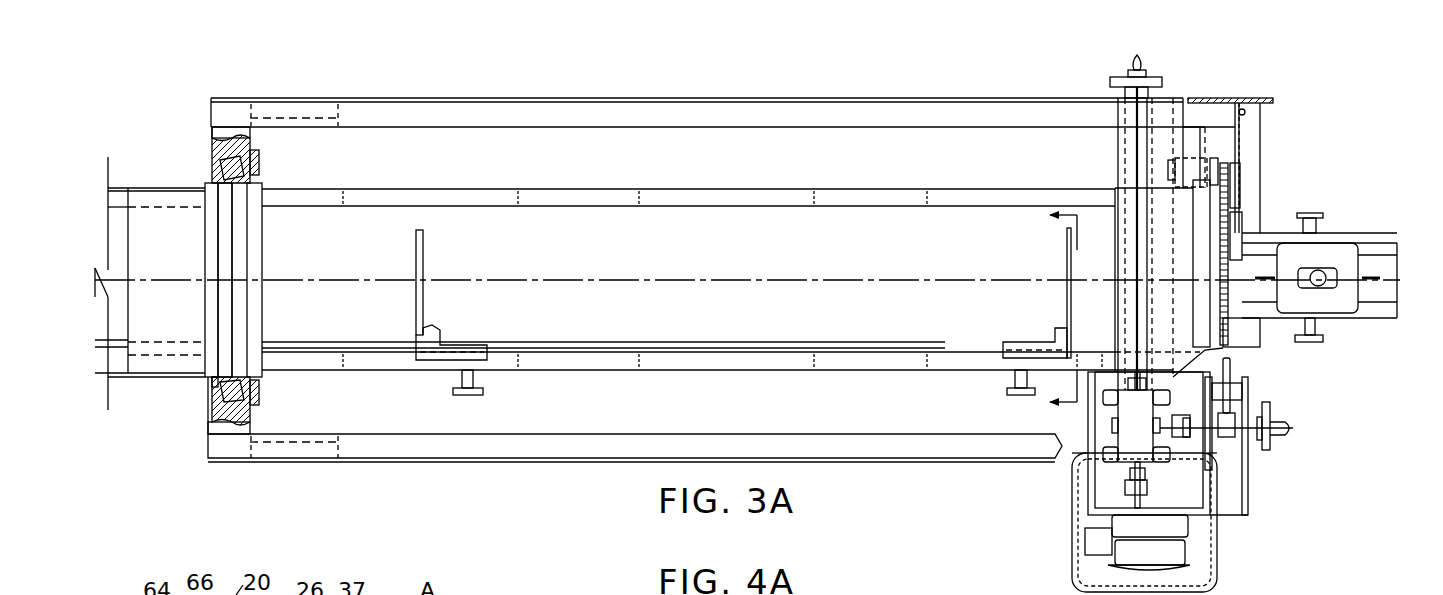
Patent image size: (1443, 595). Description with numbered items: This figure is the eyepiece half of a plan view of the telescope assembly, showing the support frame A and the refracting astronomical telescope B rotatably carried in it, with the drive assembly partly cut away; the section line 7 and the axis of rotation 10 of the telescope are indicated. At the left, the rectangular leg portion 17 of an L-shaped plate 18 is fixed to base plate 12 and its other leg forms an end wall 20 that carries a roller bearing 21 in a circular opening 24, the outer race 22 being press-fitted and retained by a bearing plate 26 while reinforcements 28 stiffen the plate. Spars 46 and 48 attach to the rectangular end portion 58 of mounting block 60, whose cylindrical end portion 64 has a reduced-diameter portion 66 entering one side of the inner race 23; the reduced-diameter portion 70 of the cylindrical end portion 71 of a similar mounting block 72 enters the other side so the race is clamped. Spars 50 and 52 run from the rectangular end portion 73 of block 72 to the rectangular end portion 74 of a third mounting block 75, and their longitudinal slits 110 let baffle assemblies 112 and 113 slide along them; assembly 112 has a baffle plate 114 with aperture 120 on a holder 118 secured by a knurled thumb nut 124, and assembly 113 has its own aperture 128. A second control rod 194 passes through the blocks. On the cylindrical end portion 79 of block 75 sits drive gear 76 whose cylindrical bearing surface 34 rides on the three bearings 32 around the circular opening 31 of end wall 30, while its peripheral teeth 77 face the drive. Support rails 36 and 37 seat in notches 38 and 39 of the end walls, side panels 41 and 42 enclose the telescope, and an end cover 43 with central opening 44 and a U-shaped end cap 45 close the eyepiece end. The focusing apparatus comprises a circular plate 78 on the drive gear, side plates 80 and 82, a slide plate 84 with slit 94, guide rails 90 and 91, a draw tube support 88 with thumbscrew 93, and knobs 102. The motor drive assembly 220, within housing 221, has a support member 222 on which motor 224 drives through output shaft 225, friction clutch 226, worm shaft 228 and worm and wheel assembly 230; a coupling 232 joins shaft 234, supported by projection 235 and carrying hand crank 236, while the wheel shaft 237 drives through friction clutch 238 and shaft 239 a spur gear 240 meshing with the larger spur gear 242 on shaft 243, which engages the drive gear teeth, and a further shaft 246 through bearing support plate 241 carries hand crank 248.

The center axis of apparatus 10 is at (786, 278).
The base plate 12 is at (606, 262).
The rectangular leg portion 17 is at (326, 424).
The L-shaped plate 18 is at (210, 428).
The end wall 20 is at (220, 410).
The roller bearing 21 is at (213, 385).
The outer race 22 is at (238, 402).
The inner race 23 is at (228, 384).
The circular opening 24 is at (252, 396).
The bearing plate 26 is at (256, 150).
The reinforcements 28 is at (300, 106).
The end wall 30 is at (1198, 128).
The circular opening 31 is at (1195, 152).
The bearings 32 is at (1230, 170).
The cylindrical bearing surface 34 is at (1215, 278).
The support rail 36 is at (552, 442).
The support rail 37 is at (928, 116).
The notches 38 is at (224, 130).
The notches 39 is at (1190, 128).
The side panel 41 is at (890, 460).
The side panel 42 is at (838, 97).
The end cover 43 is at (1248, 126).
The central opening 44 is at (1239, 192).
The U-shaped end cap 45 is at (1253, 98).
The spar 46 is at (118, 190).
The spar 48 is at (118, 366).
The spar 50 is at (680, 204).
The spar 52 is at (722, 366).
The rectangular end portion 58 is at (177, 329).
The mounting block 60 is at (159, 187).
The cylindrical end portion 64 is at (207, 182).
The reduced-diameter portion 66 is at (226, 243).
The reduced-diameter portion 70 is at (258, 251).
The cylindrical end portion 71 is at (252, 302).
The mounting block 72 is at (288, 185).
The rectangular end portion 73 is at (328, 307).
The rectangular end portion 74 is at (1113, 306).
The mounting block 75 is at (1114, 186).
The drive gear 76 is at (1236, 206).
The peripheral teeth 77 is at (1235, 332).
The circular plate 78 is at (1241, 225).
The cylindrical end portion 79 is at (1200, 230).
The side plate 80 is at (1320, 325).
The side plate 82 is at (1318, 240).
The slide plate 84 is at (1392, 273).
The draw tube support 88 is at (1343, 266).
The guide rail 90 is at (1378, 312).
The guide rail 91 is at (1395, 250).
The thumbscrew 93 is at (1318, 285).
The slit 94 is at (1366, 284).
The knobs 102 is at (1324, 217).
The longitudinal slits 110 is at (517, 197).
The baffle assembly 112 is at (1064, 286).
The baffle assembly 113 is at (438, 318).
The baffle plate 114 is at (1064, 242).
The baffle plate holder 118 is at (1043, 345).
The aperture 120 is at (1066, 276).
The knurled thumb nut 124 is at (1008, 392).
The aperture 128 is at (426, 258).
The second control rod 194 is at (676, 339).
The motor drive assembly 220 is at (1265, 504).
The housing 221 is at (1072, 570).
The support member 222 is at (1125, 159).
The motor 224 is at (1165, 561).
The output shaft 225 is at (1104, 520).
The friction clutch 226 is at (1148, 490).
The worm shaft 228 is at (1142, 470).
The worm and wheel assembly 230 is at (1150, 411).
The coupling 232 is at (1118, 374).
The shaft 234 is at (1135, 140).
The projection 235 is at (1118, 103).
The precision hand crank 236 is at (1153, 82).
The wheel shaft 237 is at (1155, 430).
The friction clutch 238 is at (1221, 514).
The shaft 239 is at (1268, 448).
The spur gear 240 is at (1240, 455).
The bearing support plate 241 is at (1247, 516).
The spur gear 242 is at (1235, 382).
The rotatable shaft 243 is at (1222, 392).
The rotatable shaft 246 is at (1276, 420).
The precision hand crank 248 is at (1294, 430).
The section line 7 is at (1065, 309).
The frame A is at (464, 96).
The refracting astronomical telescope B is at (571, 186).